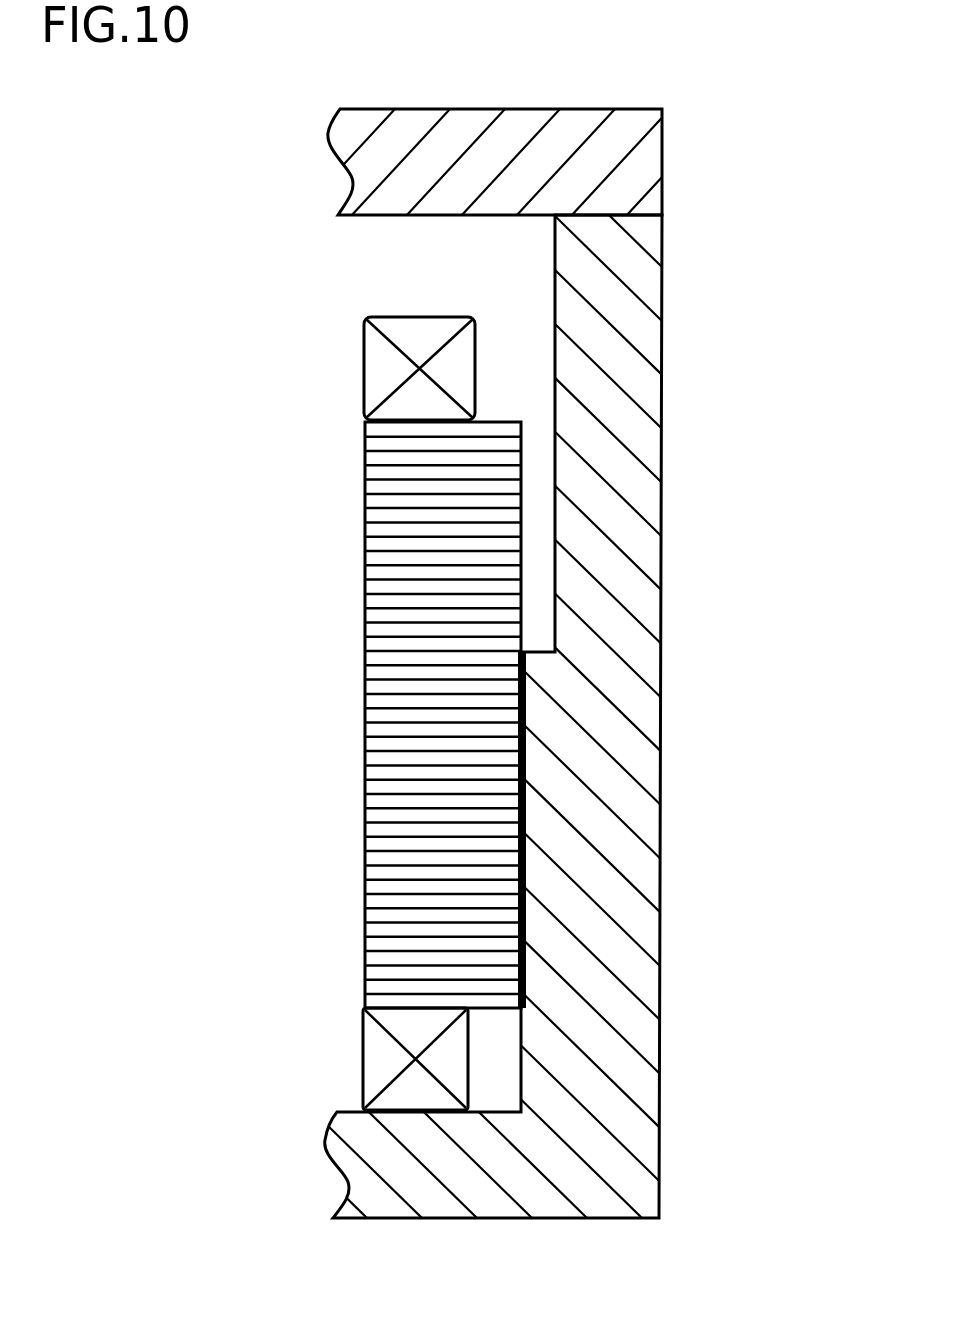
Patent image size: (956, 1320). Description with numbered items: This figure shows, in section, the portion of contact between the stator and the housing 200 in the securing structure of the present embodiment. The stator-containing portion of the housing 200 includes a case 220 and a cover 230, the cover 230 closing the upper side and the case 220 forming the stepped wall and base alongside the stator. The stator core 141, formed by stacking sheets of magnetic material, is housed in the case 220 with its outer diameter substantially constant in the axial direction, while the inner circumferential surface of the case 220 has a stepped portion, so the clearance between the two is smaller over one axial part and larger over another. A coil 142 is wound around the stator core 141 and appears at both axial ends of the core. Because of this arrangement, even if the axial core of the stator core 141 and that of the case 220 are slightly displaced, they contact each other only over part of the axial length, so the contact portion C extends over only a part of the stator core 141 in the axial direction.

The housing 200 is at (478, 665).
The cover 230 is at (610, 166).
The case 220 is at (478, 715).
The coil 142 is at (453, 373).
The stator core 141 is at (490, 532).
The contact portion C is at (524, 830).